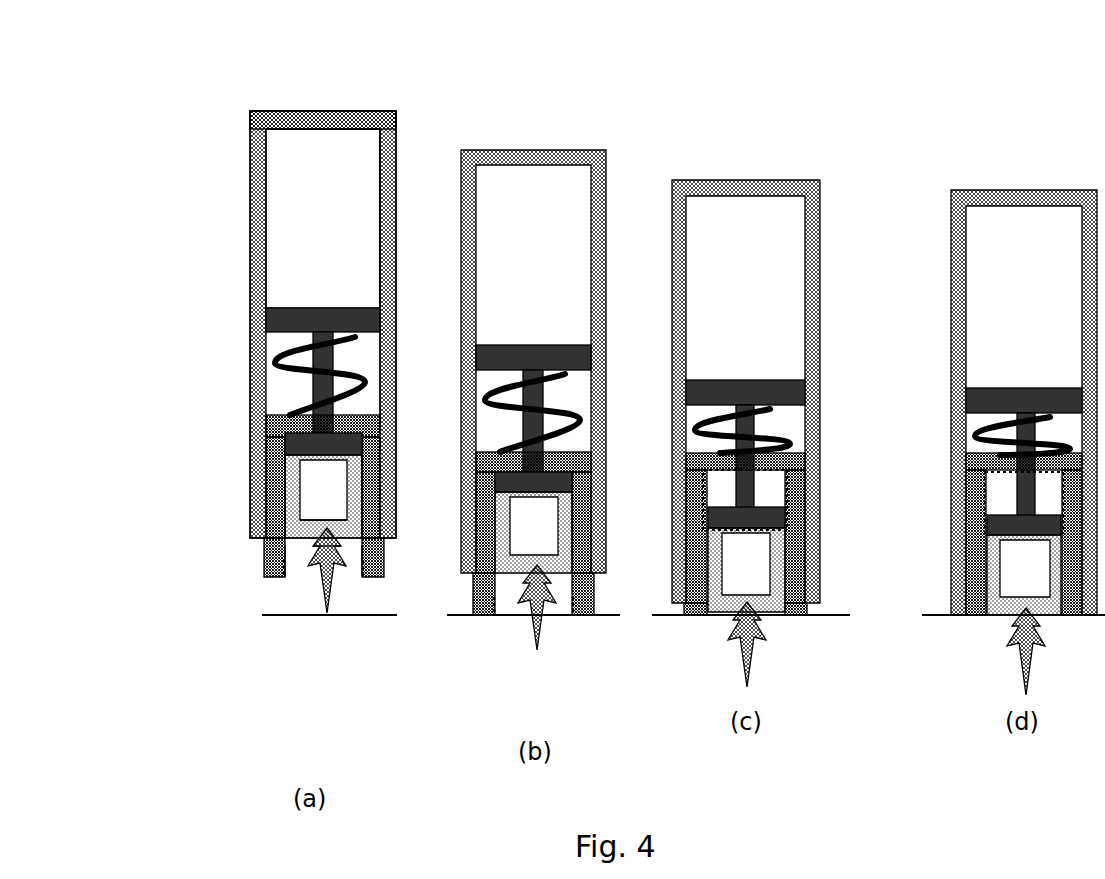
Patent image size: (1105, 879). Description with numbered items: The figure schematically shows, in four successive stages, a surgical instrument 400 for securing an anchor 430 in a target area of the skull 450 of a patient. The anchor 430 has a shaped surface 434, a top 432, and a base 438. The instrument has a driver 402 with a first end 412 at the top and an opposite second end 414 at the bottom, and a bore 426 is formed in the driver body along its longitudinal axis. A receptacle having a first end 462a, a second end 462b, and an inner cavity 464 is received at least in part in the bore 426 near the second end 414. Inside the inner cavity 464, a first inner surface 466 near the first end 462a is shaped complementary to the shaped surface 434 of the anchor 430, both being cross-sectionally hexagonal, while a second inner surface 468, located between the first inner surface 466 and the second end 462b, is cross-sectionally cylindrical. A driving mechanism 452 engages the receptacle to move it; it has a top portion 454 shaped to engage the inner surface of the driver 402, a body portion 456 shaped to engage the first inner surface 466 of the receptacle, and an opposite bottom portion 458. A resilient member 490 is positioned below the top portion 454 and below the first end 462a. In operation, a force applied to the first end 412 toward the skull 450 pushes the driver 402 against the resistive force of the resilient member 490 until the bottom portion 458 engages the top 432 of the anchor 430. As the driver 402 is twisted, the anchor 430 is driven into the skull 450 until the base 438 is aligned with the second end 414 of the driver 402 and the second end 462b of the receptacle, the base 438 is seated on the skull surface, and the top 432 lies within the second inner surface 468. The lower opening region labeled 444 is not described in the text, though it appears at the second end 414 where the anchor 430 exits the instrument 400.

The surgical instrument 400 is at (207, 82).
The driver 402 is at (246, 205).
The first end 412 is at (331, 100).
The bore 426 is at (370, 175).
The driving mechanism 452 is at (296, 297).
The top portion 454 is at (383, 310).
The body portion 456 is at (290, 345).
The resilient member 490 is at (272, 368).
The first end 462a is at (367, 410).
The top 432 is at (266, 432).
The shaped surface 434 is at (372, 468).
The bottom portion 458 is at (268, 452).
The first inner surface 466 is at (268, 490).
The second inner surface 468 is at (268, 530).
The second end 414 is at (250, 548).
The bottom opening 444 is at (296, 560).
The anchor 430 is at (308, 602).
The inner cavity 464 is at (351, 550).
The base 438 is at (340, 578).
The second end 462b is at (372, 578).
The skull 450 is at (458, 622).